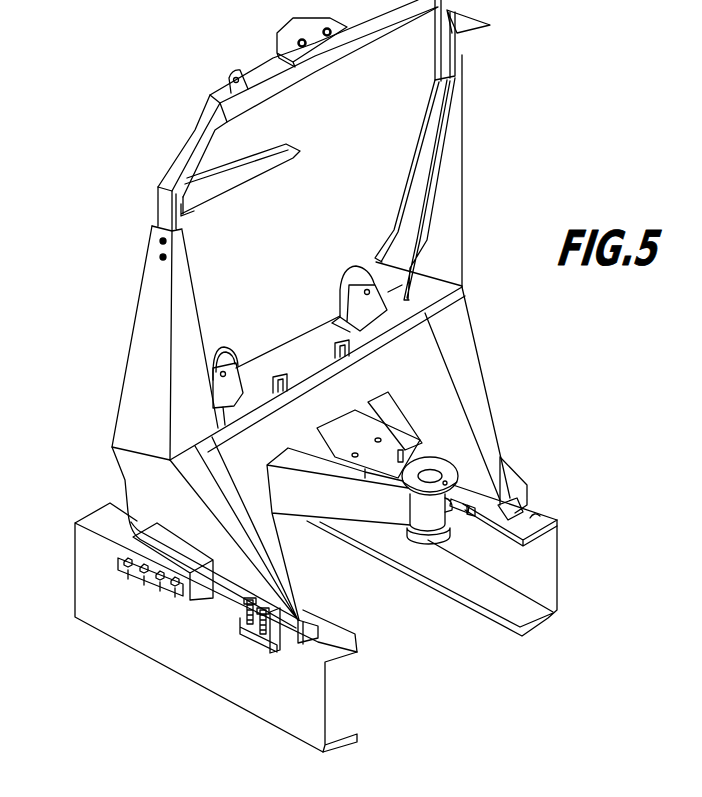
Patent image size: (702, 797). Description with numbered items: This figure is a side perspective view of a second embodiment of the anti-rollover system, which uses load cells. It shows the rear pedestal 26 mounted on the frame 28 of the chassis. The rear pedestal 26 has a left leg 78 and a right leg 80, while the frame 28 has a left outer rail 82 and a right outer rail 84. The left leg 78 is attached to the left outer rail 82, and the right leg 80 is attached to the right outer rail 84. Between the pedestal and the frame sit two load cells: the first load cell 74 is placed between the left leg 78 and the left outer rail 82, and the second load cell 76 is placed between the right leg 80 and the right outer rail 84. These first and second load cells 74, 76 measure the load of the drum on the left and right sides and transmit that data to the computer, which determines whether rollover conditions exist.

The rear pedestal 26 is at (148, 333).
The frame 28 is at (50, 557).
The first load cell 74 is at (335, 631).
The second load cell 76 is at (535, 515).
The left leg 78 is at (275, 554).
The right leg 80 is at (477, 374).
The left outer rail 82 is at (280, 708).
The right outer rail 84 is at (537, 583).